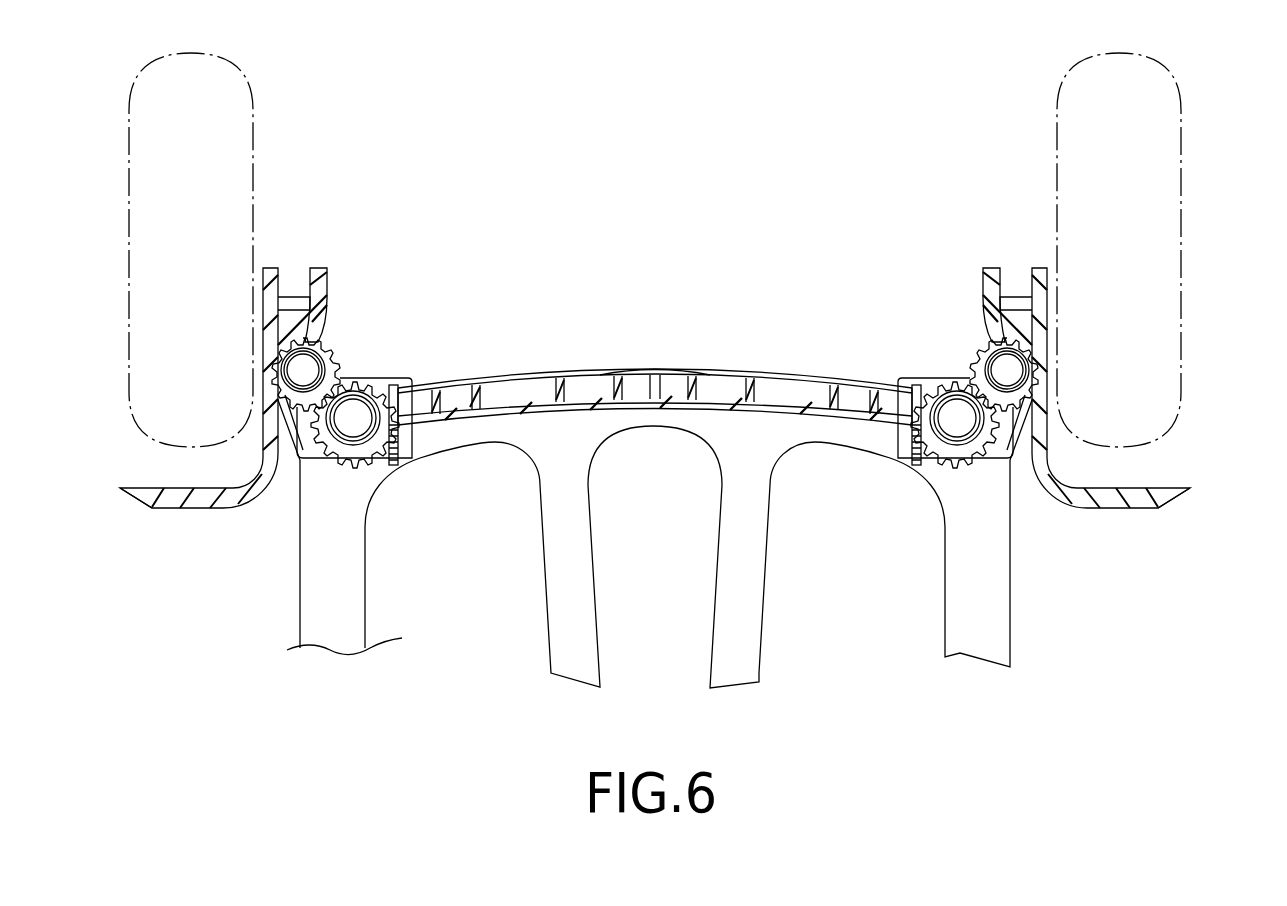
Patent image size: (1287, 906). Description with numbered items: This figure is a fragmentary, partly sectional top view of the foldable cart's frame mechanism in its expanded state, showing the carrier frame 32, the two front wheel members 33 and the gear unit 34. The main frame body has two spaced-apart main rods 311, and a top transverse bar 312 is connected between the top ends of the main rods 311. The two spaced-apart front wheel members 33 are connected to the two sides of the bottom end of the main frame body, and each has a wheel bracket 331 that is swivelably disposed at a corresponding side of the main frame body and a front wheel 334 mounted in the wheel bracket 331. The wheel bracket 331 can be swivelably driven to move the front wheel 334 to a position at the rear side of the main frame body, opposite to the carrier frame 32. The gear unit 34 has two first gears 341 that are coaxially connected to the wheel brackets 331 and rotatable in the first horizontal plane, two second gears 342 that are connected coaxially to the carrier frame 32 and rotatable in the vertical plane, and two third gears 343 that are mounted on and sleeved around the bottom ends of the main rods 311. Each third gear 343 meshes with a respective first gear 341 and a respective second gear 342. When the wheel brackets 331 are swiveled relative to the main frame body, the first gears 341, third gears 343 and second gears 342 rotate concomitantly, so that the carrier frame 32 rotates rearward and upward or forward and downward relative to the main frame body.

The carrier frame 32 is at (555, 593).
The front wheel member 33 is at (205, 514).
The wheel bracket 331 is at (150, 506).
The front wheel 334 is at (212, 147).
The gear unit 34 is at (974, 474).
The first gear 341 is at (322, 342).
The second gear 342 is at (393, 462).
The third gear 343 is at (372, 398).
The main rod 311 is at (420, 382).
The top transverse bar 312 is at (637, 370).